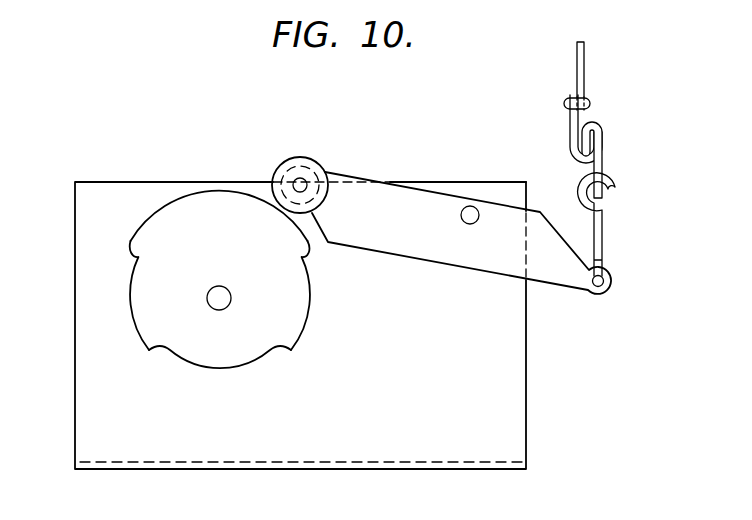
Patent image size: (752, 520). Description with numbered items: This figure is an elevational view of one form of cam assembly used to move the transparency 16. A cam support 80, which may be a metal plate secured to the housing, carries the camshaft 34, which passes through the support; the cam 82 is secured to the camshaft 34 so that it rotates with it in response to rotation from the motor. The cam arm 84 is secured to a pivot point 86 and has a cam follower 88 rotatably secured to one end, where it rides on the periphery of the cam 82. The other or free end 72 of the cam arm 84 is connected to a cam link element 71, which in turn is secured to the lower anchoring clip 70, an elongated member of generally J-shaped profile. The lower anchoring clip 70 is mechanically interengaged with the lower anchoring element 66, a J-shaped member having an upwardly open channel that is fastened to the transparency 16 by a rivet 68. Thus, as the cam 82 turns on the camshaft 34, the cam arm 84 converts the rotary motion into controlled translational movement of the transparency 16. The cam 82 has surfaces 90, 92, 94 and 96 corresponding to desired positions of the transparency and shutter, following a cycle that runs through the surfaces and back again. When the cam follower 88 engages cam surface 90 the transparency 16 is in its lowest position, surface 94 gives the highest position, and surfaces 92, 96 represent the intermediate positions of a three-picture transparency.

The transparency 16 is at (585, 63).
The camshaft 34 is at (218, 286).
The lower anchoring element 66 is at (569, 124).
The rivet 68 is at (590, 102).
The lower anchoring clip 70 is at (604, 153).
The cam link element 71 is at (603, 237).
The free end of cam arm 72 is at (563, 292).
The cam support 80 is at (75, 402).
The cam 82 is at (219, 264).
The cam arm 84 is at (461, 242).
The pivot point 86 is at (470, 206).
The cam follower 88 is at (312, 159).
The cam surface 90 is at (142, 226).
The cam surface 92 is at (130, 303).
The cam surface 94 is at (235, 368).
The cam surface 96 is at (312, 308).